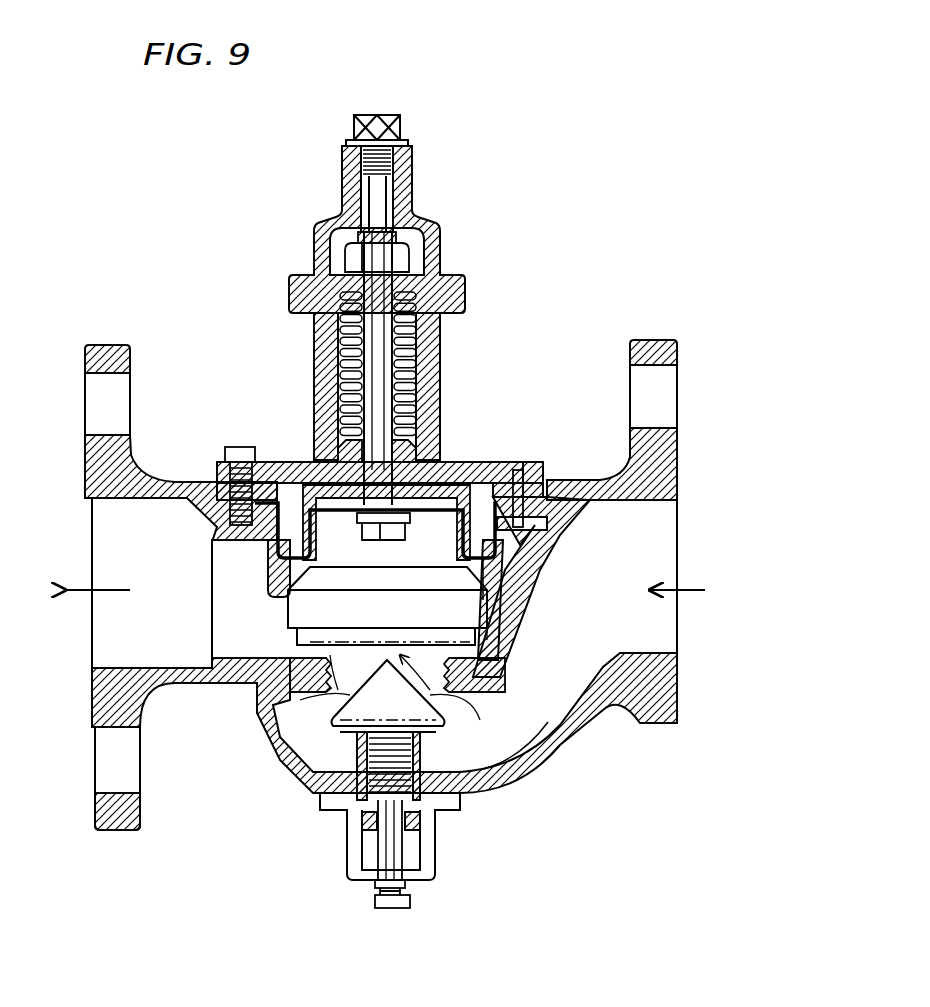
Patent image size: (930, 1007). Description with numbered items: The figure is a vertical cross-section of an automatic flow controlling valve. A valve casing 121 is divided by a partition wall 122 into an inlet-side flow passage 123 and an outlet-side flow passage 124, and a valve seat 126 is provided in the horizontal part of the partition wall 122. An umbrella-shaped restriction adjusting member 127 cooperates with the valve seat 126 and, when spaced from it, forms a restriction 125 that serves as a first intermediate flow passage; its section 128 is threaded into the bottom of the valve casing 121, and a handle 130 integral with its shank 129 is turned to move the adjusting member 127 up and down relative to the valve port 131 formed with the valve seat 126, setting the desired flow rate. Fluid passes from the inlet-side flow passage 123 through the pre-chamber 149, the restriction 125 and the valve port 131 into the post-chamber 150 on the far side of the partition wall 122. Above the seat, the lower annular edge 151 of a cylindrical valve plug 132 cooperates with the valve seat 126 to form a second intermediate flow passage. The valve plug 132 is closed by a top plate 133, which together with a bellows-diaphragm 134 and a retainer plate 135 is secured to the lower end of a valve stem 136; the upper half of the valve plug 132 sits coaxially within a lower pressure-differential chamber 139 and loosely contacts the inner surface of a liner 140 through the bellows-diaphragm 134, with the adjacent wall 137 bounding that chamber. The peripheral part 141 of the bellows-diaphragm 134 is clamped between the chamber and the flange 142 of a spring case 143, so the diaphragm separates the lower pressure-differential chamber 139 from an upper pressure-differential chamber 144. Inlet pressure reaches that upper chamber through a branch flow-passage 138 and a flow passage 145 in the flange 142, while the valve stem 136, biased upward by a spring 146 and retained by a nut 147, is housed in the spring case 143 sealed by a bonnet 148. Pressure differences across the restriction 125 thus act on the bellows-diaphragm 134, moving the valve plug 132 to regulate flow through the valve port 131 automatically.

The valve casing 121 is at (255, 537).
The partition wall 122 is at (505, 660).
The inlet-side flow passage 123 is at (670, 523).
The outlet-side flow passage 124 is at (163, 520).
The restriction 125 is at (275, 705).
The valve seat 126 is at (470, 677).
The umbrella-shaped restriction adjusting member 127 is at (335, 728).
The section of the adjusting member 128 is at (352, 813).
The shank 129 is at (383, 850).
The handle 130 is at (375, 903).
The valve port 131 is at (423, 683).
The valve plug 132 is at (490, 597).
The top plate 133 is at (343, 513).
The bellows-diaphragm 134 is at (312, 470).
The retainer plate 135 is at (330, 500).
The valve stem 136 is at (345, 315).
The cylinder wall 137 is at (280, 590).
The branch flow-passage 138 is at (548, 524).
The lower pressure-differential chamber 139 is at (411, 548).
The liner 140 is at (277, 568).
The peripheral part of the bellows-diaphragm 141 is at (275, 463).
The flange 142 is at (543, 475).
The spring case 143 is at (443, 345).
The upper pressure-differential chamber 144 is at (420, 467).
The flow passage 145 is at (513, 473).
The spring 146 is at (432, 393).
The adjusting nut 147 is at (420, 267).
The bonnet 148 is at (407, 188).
The pre-chamber 149 is at (520, 752).
The post-chamber 150 is at (557, 592).
The lower annular edge of the valve plug 151 is at (503, 630).